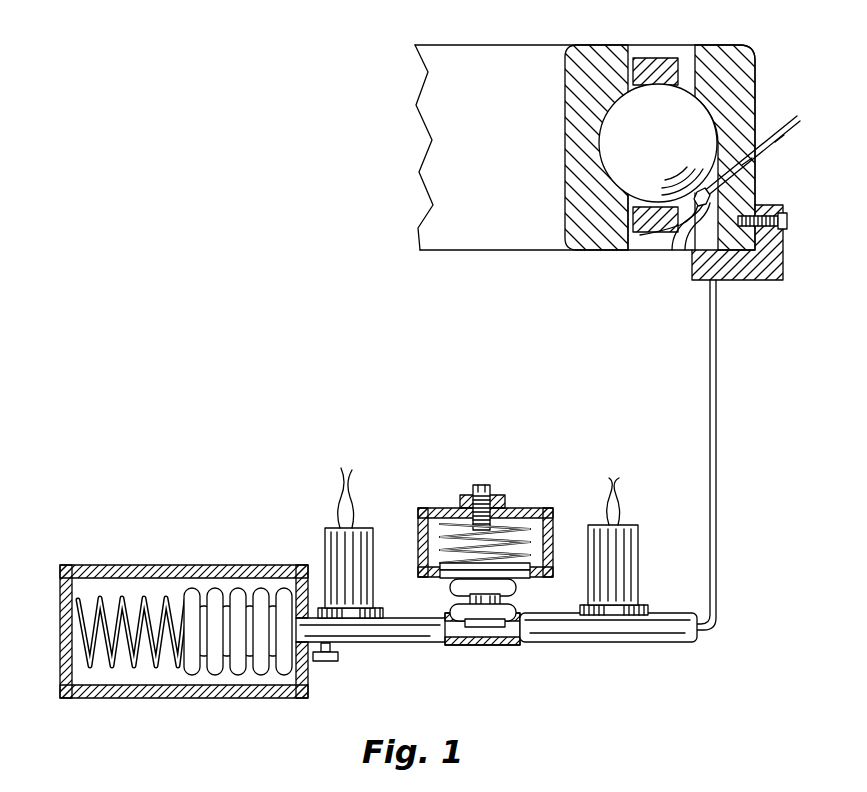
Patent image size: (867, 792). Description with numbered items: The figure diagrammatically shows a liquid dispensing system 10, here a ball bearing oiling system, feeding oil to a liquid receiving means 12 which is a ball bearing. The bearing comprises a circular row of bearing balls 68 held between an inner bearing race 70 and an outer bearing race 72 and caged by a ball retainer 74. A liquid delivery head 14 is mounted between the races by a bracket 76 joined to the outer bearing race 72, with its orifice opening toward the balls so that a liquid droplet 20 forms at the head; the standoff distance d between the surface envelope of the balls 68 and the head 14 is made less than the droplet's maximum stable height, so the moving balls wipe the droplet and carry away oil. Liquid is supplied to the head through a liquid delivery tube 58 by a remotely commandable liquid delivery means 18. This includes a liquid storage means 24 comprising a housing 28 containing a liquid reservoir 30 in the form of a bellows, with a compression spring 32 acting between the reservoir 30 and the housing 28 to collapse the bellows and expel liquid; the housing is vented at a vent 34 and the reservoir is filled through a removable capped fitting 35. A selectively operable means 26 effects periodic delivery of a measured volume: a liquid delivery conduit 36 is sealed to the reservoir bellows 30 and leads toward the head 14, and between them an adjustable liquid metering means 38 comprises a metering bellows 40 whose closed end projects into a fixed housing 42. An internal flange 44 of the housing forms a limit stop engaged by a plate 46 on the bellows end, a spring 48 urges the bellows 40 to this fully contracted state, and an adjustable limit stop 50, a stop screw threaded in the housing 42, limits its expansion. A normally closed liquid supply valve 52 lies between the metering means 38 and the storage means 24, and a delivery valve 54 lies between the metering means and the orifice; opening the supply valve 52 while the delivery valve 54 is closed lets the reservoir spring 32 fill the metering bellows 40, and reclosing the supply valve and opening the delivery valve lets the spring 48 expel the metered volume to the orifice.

The liquid dispensing system 10 is at (268, 472).
The liquid receiving means 12 is at (503, 259).
The liquid delivery head 14 is at (677, 251).
The liquid delivery means 18 is at (494, 650).
The liquid droplet 20 is at (647, 251).
The liquid storage means 24 is at (144, 560).
The selectively operable means 26 is at (455, 477).
The housing 28 is at (190, 566).
The liquid reservoir 30 is at (262, 586).
The compression spring 32 is at (118, 668).
The vent 34 is at (60, 588).
The removable capped fitting 35 is at (325, 661).
The liquid delivery conduit 36 is at (613, 644).
The adjustable liquid metering means 38 is at (516, 477).
The metering bellows 40 is at (517, 593).
The fixed housing 42 is at (421, 515).
The internal flange 44 is at (440, 574).
The plate 46 is at (444, 566).
The spring 48 is at (444, 543).
The adjustable limit stop 50 is at (481, 485).
The liquid supply valve 52 is at (336, 528).
The delivery valve 54 is at (640, 563).
The liquid delivery tube 58 is at (718, 338).
The bearing balls 68 is at (670, 140).
The inner bearing race 70 is at (563, 142).
The outer bearing race 72 is at (757, 72).
The ball retainer 74 is at (655, 58).
The bracket 76 is at (785, 249).
The standoff distance d is at (757, 156).